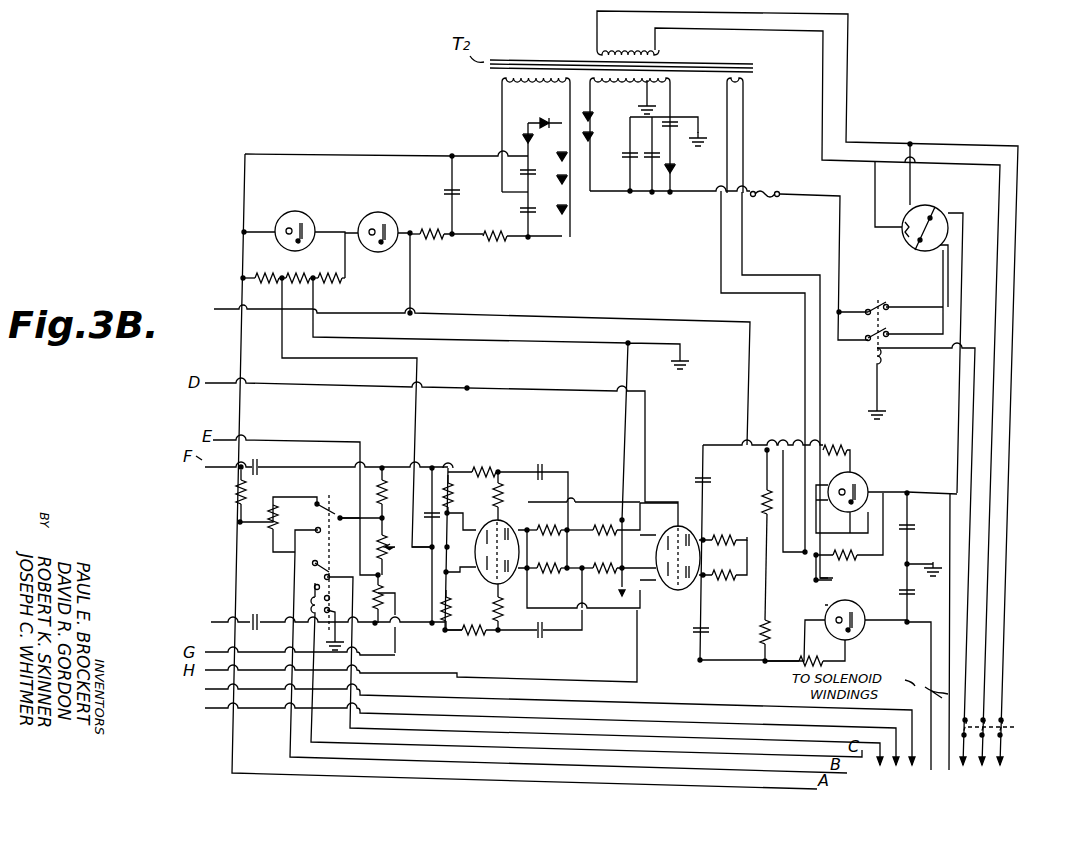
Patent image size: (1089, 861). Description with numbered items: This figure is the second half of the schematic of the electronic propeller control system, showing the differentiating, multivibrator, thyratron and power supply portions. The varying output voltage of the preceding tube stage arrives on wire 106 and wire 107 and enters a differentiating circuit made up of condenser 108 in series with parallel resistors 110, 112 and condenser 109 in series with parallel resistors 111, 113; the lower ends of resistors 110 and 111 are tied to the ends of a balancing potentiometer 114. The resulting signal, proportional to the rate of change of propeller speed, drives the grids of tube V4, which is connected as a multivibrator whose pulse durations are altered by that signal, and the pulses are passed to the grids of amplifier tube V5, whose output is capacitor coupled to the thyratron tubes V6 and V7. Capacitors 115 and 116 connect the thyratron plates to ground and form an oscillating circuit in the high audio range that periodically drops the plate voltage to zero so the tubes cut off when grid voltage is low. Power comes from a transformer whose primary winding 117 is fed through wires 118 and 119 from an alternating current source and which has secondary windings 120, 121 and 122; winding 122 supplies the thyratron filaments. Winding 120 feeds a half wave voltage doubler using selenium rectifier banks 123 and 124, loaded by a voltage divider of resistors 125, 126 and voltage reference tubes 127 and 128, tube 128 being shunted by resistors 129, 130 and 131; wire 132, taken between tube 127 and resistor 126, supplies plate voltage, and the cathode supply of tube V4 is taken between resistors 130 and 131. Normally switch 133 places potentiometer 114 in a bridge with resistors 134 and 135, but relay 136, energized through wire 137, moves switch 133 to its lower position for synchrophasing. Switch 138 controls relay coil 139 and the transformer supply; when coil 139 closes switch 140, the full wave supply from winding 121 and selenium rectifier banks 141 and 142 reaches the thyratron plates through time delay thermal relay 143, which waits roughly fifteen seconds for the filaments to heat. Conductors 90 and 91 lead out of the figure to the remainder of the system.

The conductor 90 is at (212, 714).
The conductor 91 is at (208, 688).
The wire 106 is at (211, 615).
The wire 107 is at (216, 468).
The condenser 108 is at (256, 618).
The condenser 109 is at (258, 448).
The resistor 110 is at (408, 623).
The resistor 111 is at (390, 465).
The resistor 112 is at (451, 637).
The resistor 113 is at (442, 462).
The balancing potentiometer 114 is at (382, 546).
The capacitor 115 is at (912, 530).
The capacitor 116 is at (908, 588).
The primary winding 117 is at (624, 52).
The wire 118 is at (823, 98).
The wire 119 is at (848, 98).
The secondary winding 120 is at (500, 78).
The secondary winding 121 is at (662, 85).
The secondary winding 122 is at (745, 80).
The selenium rectifier bank 123 is at (543, 120).
The selenium rectifier bank 124 is at (566, 190).
The resistor 125 is at (496, 243).
The resistor 126 is at (429, 243).
The voltage reference tube 127 is at (380, 214).
The voltage reference tube 128 is at (288, 214).
The resistor 129 is at (338, 282).
The resistor 130 is at (304, 276).
The resistor 131 is at (266, 276).
The wire 132 is at (214, 309).
The switch 133 is at (338, 490).
The resistor 134 is at (288, 490).
The resistor 135 is at (270, 552).
The relay 136 is at (337, 576).
The wire 137 is at (352, 642).
The switch 138 is at (1014, 726).
The relay coil 139 is at (883, 356).
The switch 140 is at (878, 293).
The selenium rectifier bank 141 is at (586, 126).
The selenium rectifier bank 142 is at (670, 140).
The time delay thermal relay 143 is at (936, 207).
The tube V4 is at (561, 551).
The amplifier tube V5 is at (721, 551).
The thyratron tube V6 is at (885, 513).
The thyratron tube V7 is at (858, 637).